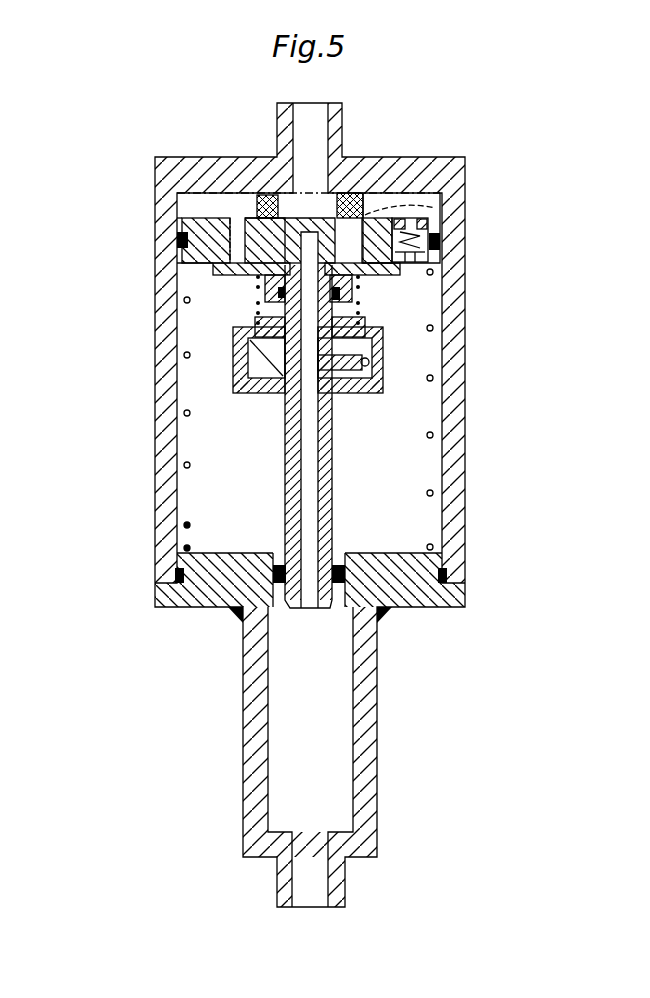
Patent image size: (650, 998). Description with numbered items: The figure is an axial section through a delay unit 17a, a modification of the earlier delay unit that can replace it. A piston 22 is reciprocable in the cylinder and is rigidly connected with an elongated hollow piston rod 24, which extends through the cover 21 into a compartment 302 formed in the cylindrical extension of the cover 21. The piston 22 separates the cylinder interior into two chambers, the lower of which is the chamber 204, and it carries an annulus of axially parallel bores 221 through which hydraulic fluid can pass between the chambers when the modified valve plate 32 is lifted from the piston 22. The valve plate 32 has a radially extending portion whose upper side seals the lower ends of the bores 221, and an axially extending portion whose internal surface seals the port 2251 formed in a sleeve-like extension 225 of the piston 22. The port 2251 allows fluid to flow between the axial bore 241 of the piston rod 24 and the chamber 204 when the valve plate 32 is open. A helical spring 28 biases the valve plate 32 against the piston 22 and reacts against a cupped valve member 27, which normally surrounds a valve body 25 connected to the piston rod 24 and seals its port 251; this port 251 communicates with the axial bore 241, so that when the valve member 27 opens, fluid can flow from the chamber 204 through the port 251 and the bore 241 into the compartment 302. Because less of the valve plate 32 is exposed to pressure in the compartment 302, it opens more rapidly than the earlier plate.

The delay unit 17a is at (104, 420).
The cover 21 is at (427, 597).
The piston 22 is at (207, 227).
The axially parallel bores 221 is at (433, 210).
The port 2251 is at (355, 287).
The sleeve-like extension 225 is at (366, 332).
The piston rod 24 is at (327, 518).
The axial bore 241 is at (312, 488).
The valve body 25 is at (263, 368).
The port 251 is at (350, 363).
The valve member 27 is at (377, 372).
The helical spring 28 is at (260, 307).
The valve plate 32 is at (233, 268).
The chamber 204 is at (248, 510).
The compartment 302 is at (328, 741).